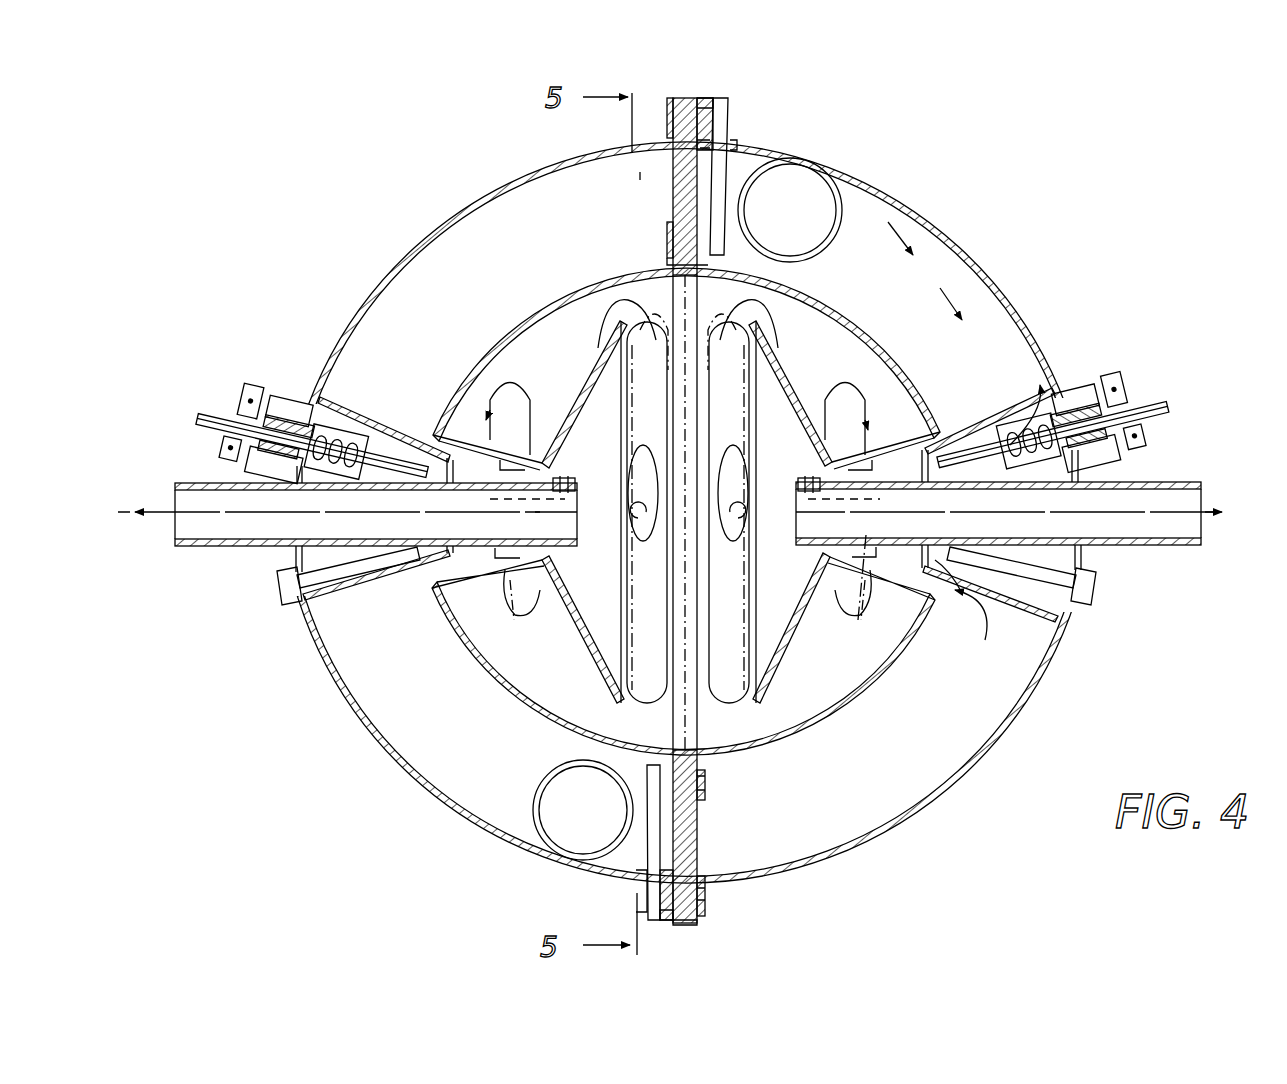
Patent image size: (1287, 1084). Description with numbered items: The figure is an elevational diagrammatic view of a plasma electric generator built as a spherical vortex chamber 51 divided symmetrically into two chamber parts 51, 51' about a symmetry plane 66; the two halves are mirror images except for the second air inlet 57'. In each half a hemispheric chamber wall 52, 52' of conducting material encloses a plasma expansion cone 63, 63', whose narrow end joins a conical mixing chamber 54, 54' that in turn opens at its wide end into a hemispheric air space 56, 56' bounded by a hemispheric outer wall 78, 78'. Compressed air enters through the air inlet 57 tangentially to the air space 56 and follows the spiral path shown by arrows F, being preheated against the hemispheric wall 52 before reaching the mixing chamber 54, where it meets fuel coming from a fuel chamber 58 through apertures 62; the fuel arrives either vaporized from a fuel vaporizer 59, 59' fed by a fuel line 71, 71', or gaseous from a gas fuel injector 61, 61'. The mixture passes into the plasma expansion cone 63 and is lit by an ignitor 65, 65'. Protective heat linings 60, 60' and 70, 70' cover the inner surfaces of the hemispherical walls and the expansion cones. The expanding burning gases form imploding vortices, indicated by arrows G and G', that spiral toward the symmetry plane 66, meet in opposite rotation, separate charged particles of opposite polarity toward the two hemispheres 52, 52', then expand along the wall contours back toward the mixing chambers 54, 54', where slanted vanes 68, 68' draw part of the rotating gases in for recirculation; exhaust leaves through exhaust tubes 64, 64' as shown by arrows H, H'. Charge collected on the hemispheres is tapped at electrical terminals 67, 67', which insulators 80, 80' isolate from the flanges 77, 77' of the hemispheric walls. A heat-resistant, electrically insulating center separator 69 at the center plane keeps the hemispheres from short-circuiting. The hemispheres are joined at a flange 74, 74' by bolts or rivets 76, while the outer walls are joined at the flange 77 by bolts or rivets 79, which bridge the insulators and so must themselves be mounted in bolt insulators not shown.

The vortex chamber 51 is at (829, 379).
The chamber part 51' is at (490, 411).
The hemispheric chamber wall 52 is at (692, 511).
The hemispheric chamber wall 52' is at (503, 741).
The conical mixing chamber 54 is at (964, 505).
The conical mixing chamber 54' is at (410, 498).
The hemispheric air space 56 is at (881, 651).
The hemispheric air space 56' is at (487, 646).
The air inlet 57 is at (817, 198).
The second air inlet 57' is at (560, 829).
The fuel chamber 58 is at (1014, 449).
The fuel vaporizer 59 is at (1099, 402).
The fuel vaporizer 59' is at (273, 412).
The protective heat lining 60 is at (852, 526).
The protective heat lining 60' is at (527, 473).
The gas fuel injector 61 is at (1024, 592).
The gas fuel injector 61' is at (334, 605).
The apertures 62 is at (912, 565).
The plasma expansion cone 63 is at (788, 377).
The plasma expansion cone 63' is at (577, 377).
The exhaust tube 64 is at (1009, 536).
The exhaust tube 64' is at (347, 540).
The ignitor 65 is at (791, 482).
The ignitor 65' is at (585, 475).
The symmetry plane 66 is at (700, 598).
The electrical terminal 67 is at (754, 176).
The electrical terminal 67' is at (624, 843).
The slanted vanes 68 is at (854, 597).
The slanted vanes 68' is at (507, 597).
The center separator 69 is at (722, 728).
The protective heat lining 70 is at (790, 512).
The protective heat lining 70' is at (584, 512).
The fuel line 71 is at (1075, 461).
The fuel line 71' is at (279, 461).
The flange 74 is at (730, 796).
The flange 74' is at (649, 181).
The bolts or rivets 76 is at (712, 783).
The flange 77 is at (750, 904).
The flange 77' is at (714, 941).
The hemispheric outer wall 78 is at (686, 512).
The hemispheric outer wall 78' is at (334, 762).
The bolts or rivets 79 is at (708, 897).
The insulator 80 is at (740, 93).
The insulator 80' is at (677, 936).
The arrows F is at (899, 230).
The arrow G is at (726, 400).
The arrow G' is at (555, 400).
The arrow H is at (1112, 485).
The arrow H' is at (226, 485).